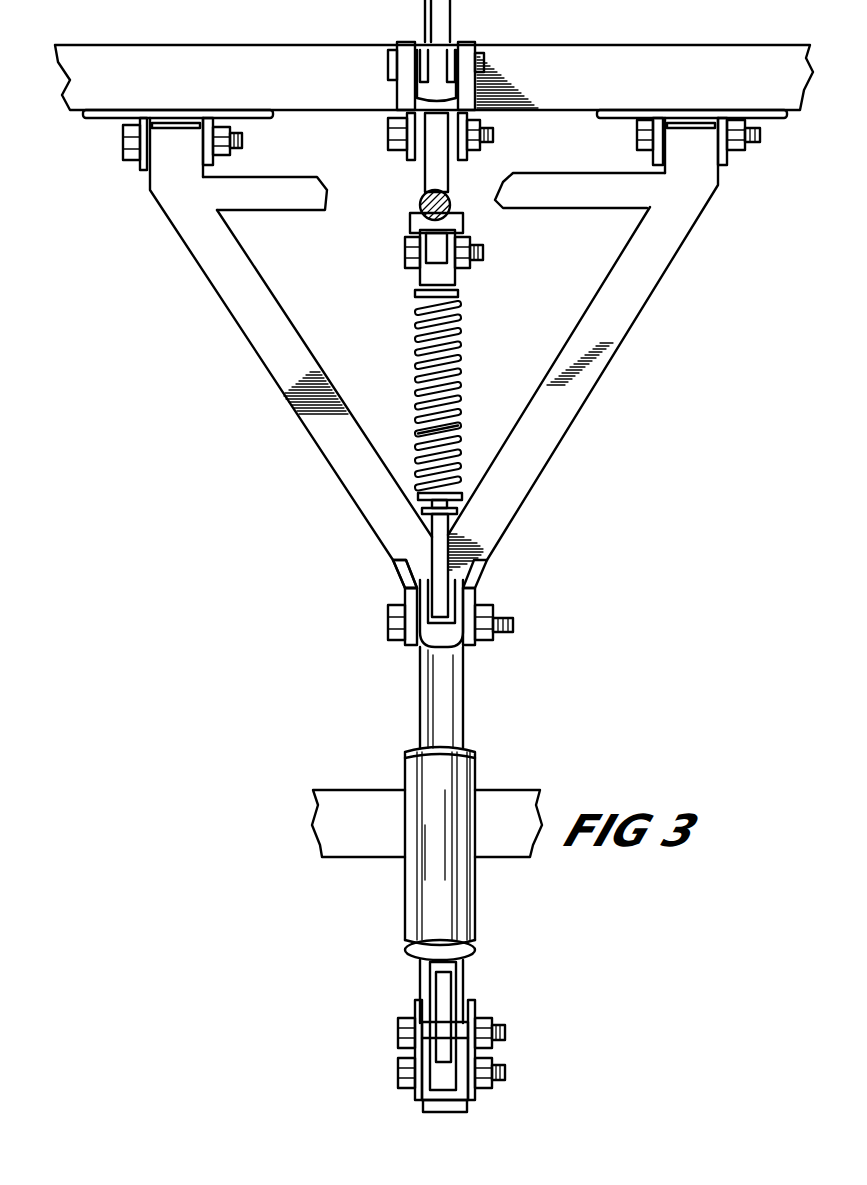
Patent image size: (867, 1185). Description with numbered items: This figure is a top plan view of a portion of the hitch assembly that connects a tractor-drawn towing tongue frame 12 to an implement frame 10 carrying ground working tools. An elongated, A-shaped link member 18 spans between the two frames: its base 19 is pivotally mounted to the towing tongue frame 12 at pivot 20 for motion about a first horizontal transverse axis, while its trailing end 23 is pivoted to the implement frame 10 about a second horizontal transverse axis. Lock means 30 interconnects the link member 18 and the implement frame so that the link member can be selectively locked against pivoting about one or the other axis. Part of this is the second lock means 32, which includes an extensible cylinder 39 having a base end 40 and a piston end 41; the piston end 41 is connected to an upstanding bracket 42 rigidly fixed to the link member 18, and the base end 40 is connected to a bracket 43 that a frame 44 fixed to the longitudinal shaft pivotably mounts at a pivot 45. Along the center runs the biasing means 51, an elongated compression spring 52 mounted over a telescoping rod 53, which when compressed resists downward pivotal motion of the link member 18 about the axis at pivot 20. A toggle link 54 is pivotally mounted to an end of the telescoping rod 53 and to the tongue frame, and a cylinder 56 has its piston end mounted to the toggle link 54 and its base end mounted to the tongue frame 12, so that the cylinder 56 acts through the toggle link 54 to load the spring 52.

The implement frame 10 is at (370, 853).
The towing tongue frame 12 is at (537, 50).
The link member 18 is at (240, 334).
The base 19 is at (230, 203).
The pivot 20 is at (122, 152).
The trailing end 23 is at (478, 557).
The lock means 30 is at (470, 689).
The second lock means 32 is at (481, 788).
The extensible cylinder 39 is at (404, 782).
The base end 40 is at (460, 980).
The piston end 41 is at (423, 648).
The upstanding bracket 42 is at (408, 554).
The bracket 43 is at (446, 1007).
The frame 44 is at (470, 1055).
The pivot 45 is at (486, 1030).
The biasing means 51 is at (470, 346).
The compression spring 52 is at (456, 381).
The telescoping rod 53 is at (455, 297).
The toggle link 54 is at (449, 173).
The cylinder 56 is at (418, 208).